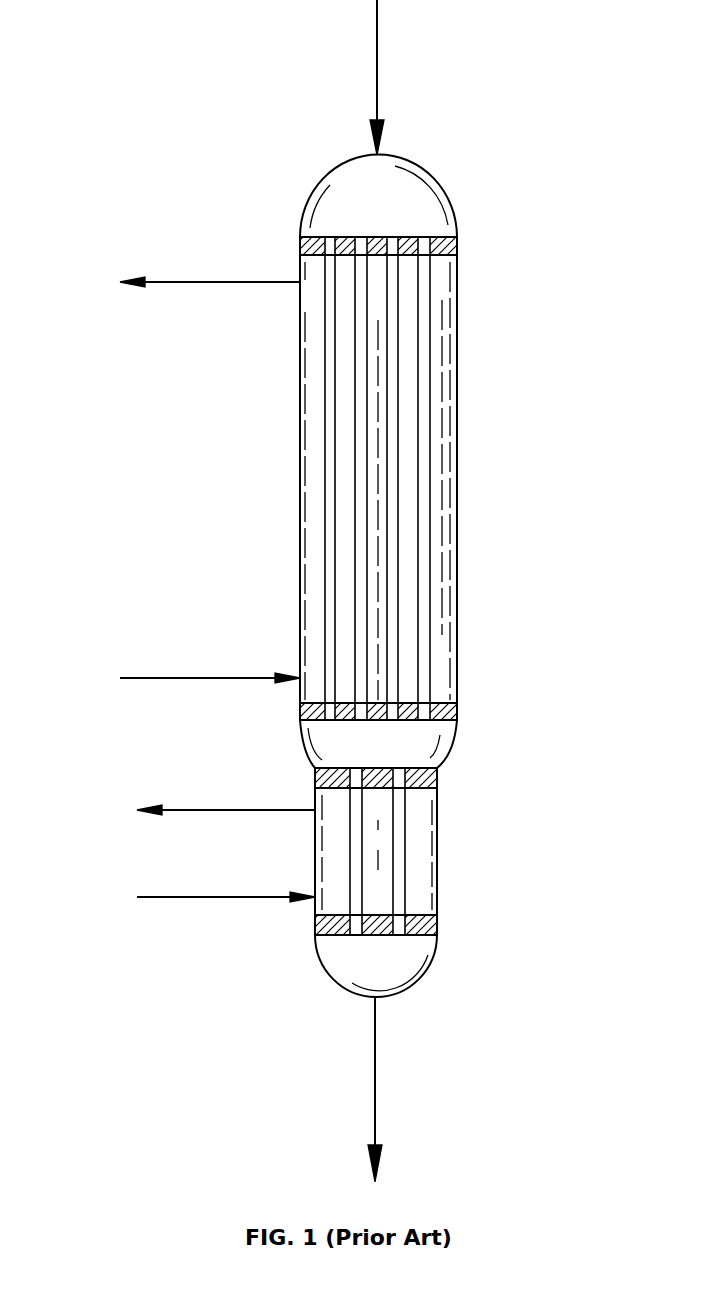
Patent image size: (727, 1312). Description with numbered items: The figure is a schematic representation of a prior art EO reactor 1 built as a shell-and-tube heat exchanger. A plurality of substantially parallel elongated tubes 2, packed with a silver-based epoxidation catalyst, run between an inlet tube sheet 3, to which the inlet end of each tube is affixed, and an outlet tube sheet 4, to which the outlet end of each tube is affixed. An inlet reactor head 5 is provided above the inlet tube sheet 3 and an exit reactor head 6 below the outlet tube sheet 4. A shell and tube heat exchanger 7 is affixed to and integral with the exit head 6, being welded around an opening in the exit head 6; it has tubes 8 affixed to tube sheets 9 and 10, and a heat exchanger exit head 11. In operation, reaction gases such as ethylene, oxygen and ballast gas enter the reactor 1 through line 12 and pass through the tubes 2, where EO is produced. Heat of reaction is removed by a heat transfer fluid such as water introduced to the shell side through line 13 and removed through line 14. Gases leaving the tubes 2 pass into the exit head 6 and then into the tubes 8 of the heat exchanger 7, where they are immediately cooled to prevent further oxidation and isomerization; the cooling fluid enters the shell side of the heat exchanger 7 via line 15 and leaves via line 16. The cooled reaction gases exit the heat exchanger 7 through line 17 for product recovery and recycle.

The EO reactor 1 is at (457, 305).
The elongated tubes 2 is at (418, 458).
The inlet tube sheet 3 is at (449, 247).
The outlet tube sheet 4 is at (455, 710).
The inlet reactor head 5 is at (420, 162).
The exit reactor head 6 is at (452, 745).
The shell and tube heat exchanger 7 is at (438, 897).
The tubes 8 is at (398, 852).
The tube sheet 9 is at (440, 783).
The tube sheet 10 is at (315, 922).
The heat exchanger exit head 11 is at (427, 975).
The line 12 is at (377, 47).
The line 13 is at (210, 678).
The line 14 is at (212, 282).
The line 15 is at (205, 897).
The line 16 is at (205, 810).
The line 17 is at (375, 1052).